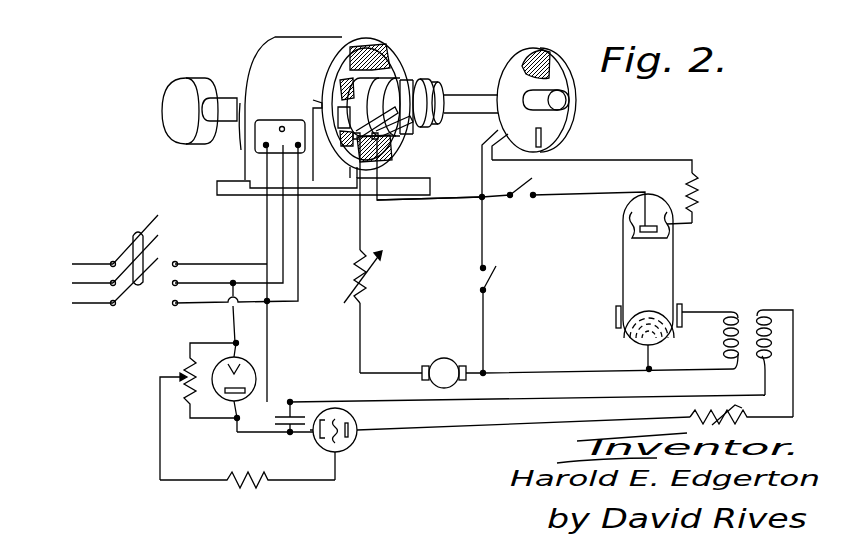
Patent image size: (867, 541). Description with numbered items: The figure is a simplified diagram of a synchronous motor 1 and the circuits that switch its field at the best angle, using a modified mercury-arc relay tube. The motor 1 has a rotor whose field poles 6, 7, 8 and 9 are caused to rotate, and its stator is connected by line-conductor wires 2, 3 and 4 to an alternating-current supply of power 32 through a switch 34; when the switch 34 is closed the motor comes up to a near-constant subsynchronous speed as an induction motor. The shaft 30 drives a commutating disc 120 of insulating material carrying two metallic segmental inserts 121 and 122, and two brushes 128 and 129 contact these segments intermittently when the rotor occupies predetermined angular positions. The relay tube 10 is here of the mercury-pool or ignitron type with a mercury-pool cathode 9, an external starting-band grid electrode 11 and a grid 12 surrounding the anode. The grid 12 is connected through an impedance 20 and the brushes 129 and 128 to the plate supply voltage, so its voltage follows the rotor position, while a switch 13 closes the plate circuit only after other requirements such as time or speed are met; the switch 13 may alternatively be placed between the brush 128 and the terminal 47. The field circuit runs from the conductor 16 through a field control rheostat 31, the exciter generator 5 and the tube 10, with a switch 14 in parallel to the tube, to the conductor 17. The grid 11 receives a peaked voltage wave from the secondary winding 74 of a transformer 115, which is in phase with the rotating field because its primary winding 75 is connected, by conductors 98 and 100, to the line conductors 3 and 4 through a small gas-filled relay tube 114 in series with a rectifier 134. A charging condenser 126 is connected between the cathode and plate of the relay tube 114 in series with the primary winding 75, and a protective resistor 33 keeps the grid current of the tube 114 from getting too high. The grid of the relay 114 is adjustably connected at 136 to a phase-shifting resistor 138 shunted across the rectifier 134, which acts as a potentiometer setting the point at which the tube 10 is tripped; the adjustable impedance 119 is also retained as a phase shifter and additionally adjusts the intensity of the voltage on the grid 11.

The synchronous motor 1 is at (278, 57).
The field pole / mercury-pool cathode 9 is at (345, 45).
The field pole 6 is at (388, 70).
The field pole 7 is at (395, 141).
The field pole 8 is at (350, 130).
The shaft 30 is at (460, 95).
The commutating disc 120 is at (556, 76).
The segmental insert 121 is at (538, 56).
The segmental insert 122 is at (545, 128).
The brush 128 is at (481, 143).
The brush 129 is at (568, 158).
The wire 16 is at (358, 224).
The wire 17 is at (414, 201).
The terminal 47 is at (482, 198).
The switch 13 is at (521, 200).
The switch 14 is at (477, 278).
The field control rheostat 31 is at (366, 292).
The generator 5 is at (444, 360).
The relay tube 10 is at (623, 260).
The grid 12 is at (672, 218).
The impedance 20 is at (699, 187).
The starting-band grid electrode 11 is at (681, 306).
The secondary winding 74 is at (723, 333).
The primary winding 75 is at (774, 331).
The transformer 115 is at (748, 313).
The adjustable impedance 119 is at (717, 412).
The conductor 98 is at (494, 398).
The conductor 100 is at (456, 430).
The relay tube 114 is at (350, 447).
The charging condenser 126 is at (294, 417).
The rectifier 134 is at (249, 361).
The phase-shifting resistor 138 is at (185, 363).
The adjustable connection 136 is at (178, 374).
The protective resistor 33 is at (244, 490).
The switch 34 is at (128, 234).
The alternating-current supply of power 32 is at (60, 283).
The line-conductor wire 2 is at (193, 260).
The line-conductor wire 3 is at (201, 280).
The line-conductor wire 4 is at (200, 305).